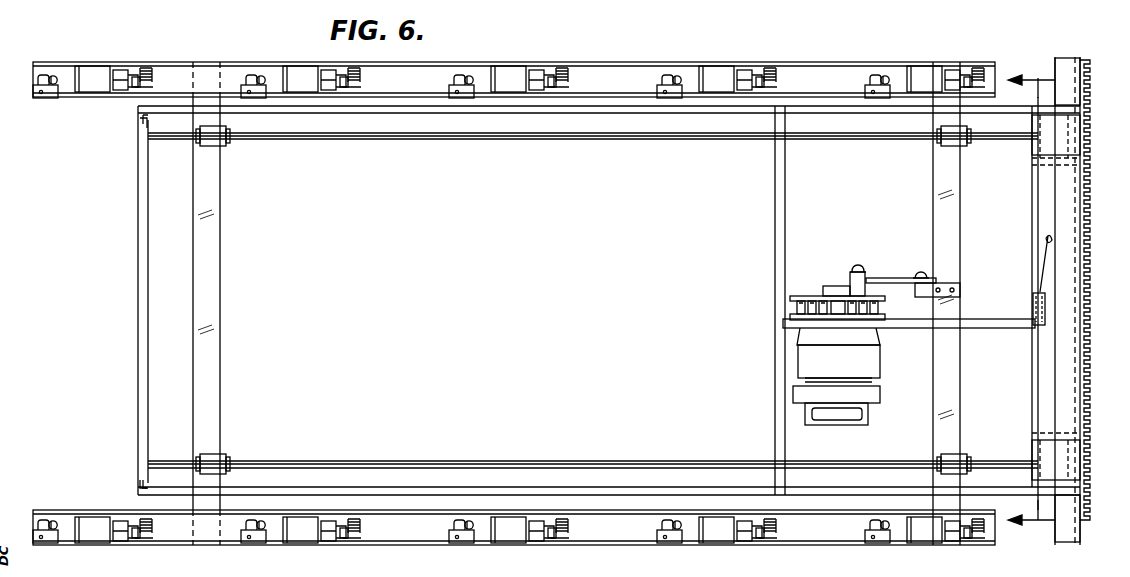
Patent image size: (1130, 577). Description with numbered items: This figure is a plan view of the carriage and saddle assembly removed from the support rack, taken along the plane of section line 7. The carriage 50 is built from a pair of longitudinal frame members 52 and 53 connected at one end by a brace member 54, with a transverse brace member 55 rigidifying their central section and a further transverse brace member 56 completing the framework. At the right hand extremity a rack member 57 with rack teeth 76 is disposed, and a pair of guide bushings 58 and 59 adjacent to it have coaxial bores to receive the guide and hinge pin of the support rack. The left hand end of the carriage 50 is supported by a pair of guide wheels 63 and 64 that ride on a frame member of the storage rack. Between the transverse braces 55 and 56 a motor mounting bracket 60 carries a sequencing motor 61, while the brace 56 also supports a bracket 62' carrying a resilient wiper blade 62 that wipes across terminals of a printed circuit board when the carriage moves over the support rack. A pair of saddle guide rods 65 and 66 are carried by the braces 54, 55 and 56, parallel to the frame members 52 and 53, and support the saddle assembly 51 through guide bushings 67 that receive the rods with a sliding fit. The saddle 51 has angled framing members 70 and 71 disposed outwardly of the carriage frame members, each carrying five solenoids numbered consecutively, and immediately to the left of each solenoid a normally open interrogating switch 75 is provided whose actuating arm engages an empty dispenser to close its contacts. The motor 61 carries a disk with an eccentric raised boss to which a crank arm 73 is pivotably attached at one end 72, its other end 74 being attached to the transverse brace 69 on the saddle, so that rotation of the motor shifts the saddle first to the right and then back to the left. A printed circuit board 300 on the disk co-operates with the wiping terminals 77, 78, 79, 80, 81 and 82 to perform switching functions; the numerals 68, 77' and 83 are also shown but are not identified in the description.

The section line 7- 7 is at (1031, 305).
The carriage 50 is at (1008, 80).
The saddle assembly 51 is at (905, 58).
The longitudinal frame member 52 is at (592, 108).
The longitudinal frame member 53 is at (647, 487).
The brace member 54 is at (138, 307).
The transverse brace member 55 is at (773, 210).
The transverse brace member 56 is at (1032, 226).
The rack member 57 is at (1078, 252).
The guide bushing 58 is at (1043, 448).
The guide bushing 59 is at (1045, 140).
The motor mounting bracket 60 is at (992, 328).
The sequencing motor 61 is at (878, 380).
The resilient wiper blade 62 is at (1017, 262).
The bracket 62' is at (1014, 306).
The guide wheel 63 is at (140, 487).
The guide wheel 64 is at (140, 120).
The saddle guide rod 65 is at (410, 467).
The saddle guide rod 66 is at (427, 142).
The guide bushing 67 is at (213, 147).
The left carriage column 68 is at (218, 316).
The transverse brace 69 is at (938, 185).
The angled framing member 70 is at (590, 62).
The angled framing member 71 is at (575, 540).
The crank arm end 72 is at (860, 266).
The crank arm 73 is at (885, 278).
The crank arm end 74 is at (920, 272).
The interrogating switch 75 is at (34, 96).
The rack teeth 76 is at (1090, 65).
The wiping terminal 77 is at (876, 306).
The contact post 77' is at (836, 264).
The wiping terminal 78 is at (870, 334).
The wiping terminal 79 is at (855, 322).
The wiping terminal 80 is at (818, 322).
The wiping terminal 81 is at (797, 322).
The wiping terminal 82 is at (795, 307).
The block 83 is at (815, 296).
The printed circuit board 300 is at (795, 299).